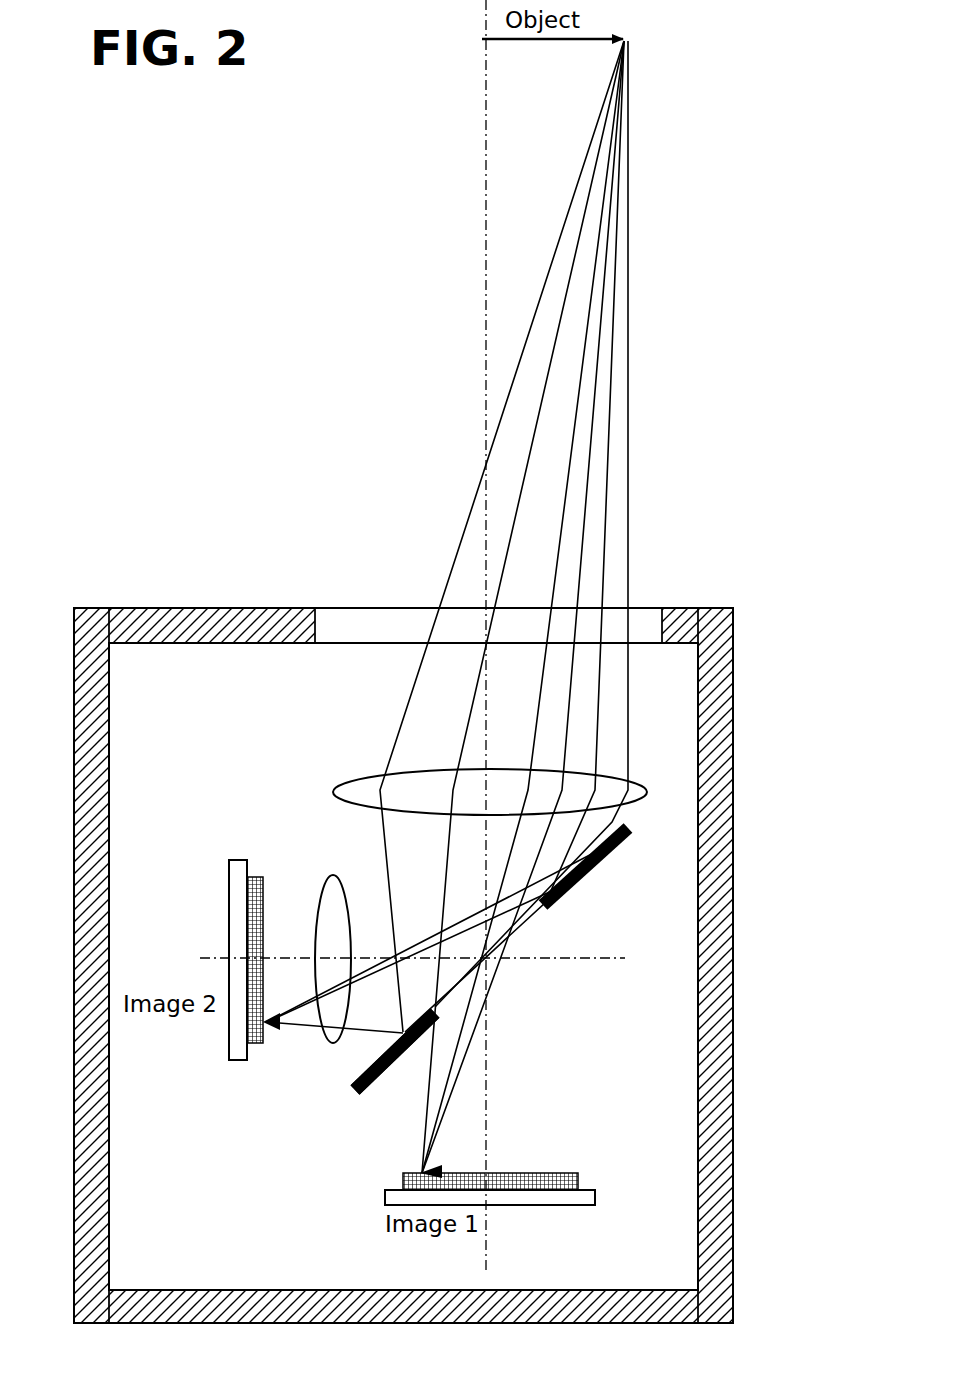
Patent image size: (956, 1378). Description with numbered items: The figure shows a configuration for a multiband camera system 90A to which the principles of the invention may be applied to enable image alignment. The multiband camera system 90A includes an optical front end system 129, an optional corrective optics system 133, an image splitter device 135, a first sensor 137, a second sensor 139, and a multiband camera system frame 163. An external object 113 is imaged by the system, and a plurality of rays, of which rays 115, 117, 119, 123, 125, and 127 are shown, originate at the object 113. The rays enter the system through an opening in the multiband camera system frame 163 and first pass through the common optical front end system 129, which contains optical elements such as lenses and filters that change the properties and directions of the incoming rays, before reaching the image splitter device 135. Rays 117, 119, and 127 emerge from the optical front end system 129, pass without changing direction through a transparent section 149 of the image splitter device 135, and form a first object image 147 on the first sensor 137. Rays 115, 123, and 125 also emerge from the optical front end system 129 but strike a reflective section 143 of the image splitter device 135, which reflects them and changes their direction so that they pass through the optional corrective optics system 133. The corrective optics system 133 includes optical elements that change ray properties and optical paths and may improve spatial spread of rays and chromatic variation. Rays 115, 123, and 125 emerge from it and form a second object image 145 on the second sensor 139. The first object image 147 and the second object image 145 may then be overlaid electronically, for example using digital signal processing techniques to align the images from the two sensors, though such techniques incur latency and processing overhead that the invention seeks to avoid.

The multiband camera system 90A is at (326, 575).
The external object 113 is at (527, 46).
The ray 115 is at (556, 250).
The ray 117 is at (467, 730).
The ray 119 is at (578, 373).
The ray 123 is at (629, 313).
The ray 125 is at (613, 367).
The ray 127 is at (588, 475).
The optical front end system 129 is at (357, 780).
The corrective optics system 133 is at (327, 878).
The image splitter device 135 is at (358, 1094).
The first sensor 137 is at (565, 1170).
The second sensor 139 is at (228, 1060).
The reflective section 143 is at (626, 842).
The second object image 145 is at (275, 972).
The first object image 147 is at (465, 1171).
The transparent section 149 is at (527, 940).
The multiband camera system frame 163 is at (735, 707).